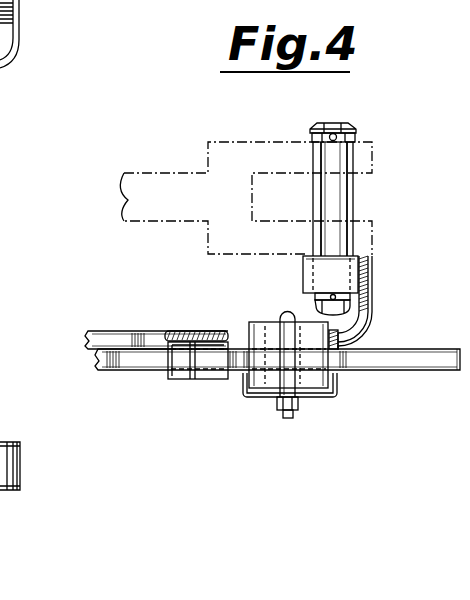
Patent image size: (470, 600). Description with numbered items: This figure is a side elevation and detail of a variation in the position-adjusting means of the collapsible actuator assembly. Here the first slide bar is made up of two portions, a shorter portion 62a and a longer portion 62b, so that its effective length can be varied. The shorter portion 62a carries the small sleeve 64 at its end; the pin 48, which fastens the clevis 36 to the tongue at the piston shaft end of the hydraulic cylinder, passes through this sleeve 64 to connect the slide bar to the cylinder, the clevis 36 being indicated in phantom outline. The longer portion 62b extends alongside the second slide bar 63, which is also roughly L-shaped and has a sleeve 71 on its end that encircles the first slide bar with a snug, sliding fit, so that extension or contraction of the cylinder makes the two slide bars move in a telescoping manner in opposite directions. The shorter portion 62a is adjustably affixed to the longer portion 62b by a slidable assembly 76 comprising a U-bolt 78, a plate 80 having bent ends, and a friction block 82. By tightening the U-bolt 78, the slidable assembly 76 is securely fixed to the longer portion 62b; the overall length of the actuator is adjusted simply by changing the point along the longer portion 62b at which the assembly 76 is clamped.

The clevis 36 is at (244, 207).
The pin 48 is at (320, 123).
The small sleeve 64 is at (322, 270).
The shorter portion 62a is at (375, 325).
The longer portion 62b is at (133, 367).
The second slide bar 63 is at (120, 332).
The sleeve 71 is at (190, 378).
The slidable assembly 76 is at (337, 393).
The U-bolt 78 is at (283, 313).
The plate 80 is at (262, 395).
The friction block 82 is at (257, 372).